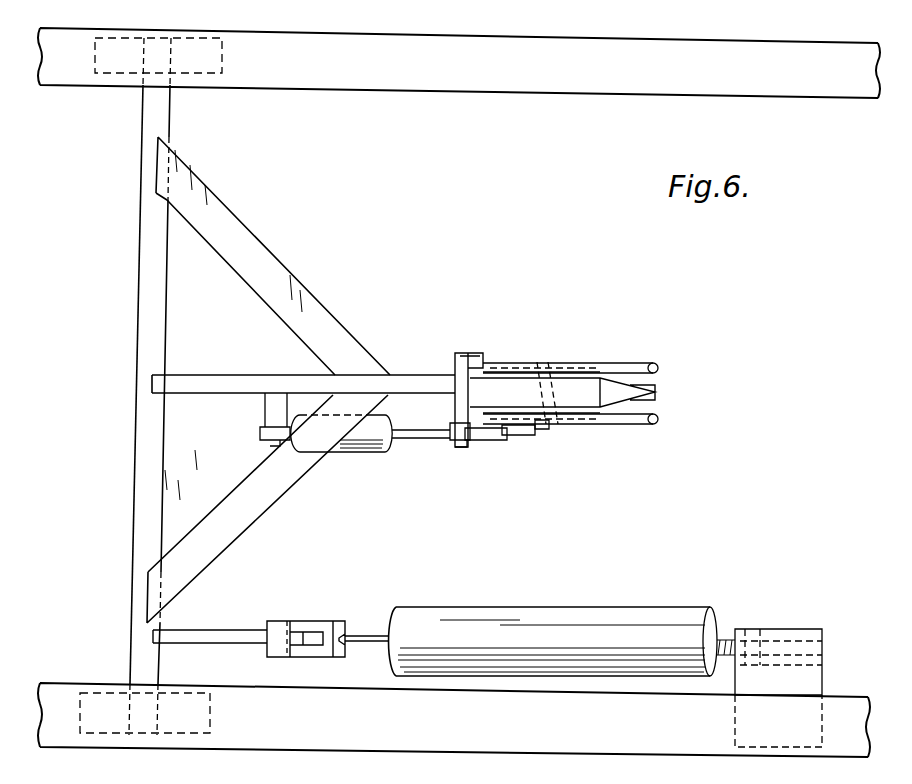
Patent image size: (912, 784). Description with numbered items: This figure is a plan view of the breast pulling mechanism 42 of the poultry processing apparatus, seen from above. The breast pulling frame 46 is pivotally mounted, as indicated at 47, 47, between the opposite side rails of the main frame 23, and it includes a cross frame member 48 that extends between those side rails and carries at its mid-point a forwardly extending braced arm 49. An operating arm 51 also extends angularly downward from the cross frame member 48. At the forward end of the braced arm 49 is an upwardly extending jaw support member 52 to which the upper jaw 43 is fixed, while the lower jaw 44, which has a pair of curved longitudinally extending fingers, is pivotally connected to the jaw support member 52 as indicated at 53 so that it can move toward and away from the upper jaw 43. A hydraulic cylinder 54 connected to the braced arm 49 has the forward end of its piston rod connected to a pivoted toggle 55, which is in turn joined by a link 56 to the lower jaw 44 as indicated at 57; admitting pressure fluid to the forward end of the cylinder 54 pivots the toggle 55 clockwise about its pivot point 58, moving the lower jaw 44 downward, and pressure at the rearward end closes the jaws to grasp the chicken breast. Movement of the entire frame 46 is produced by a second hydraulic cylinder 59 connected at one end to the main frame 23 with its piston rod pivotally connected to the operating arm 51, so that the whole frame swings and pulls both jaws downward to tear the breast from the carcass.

The main frame 23 is at (518, 44).
The clamp assembly 42 is at (605, 293).
The upper jaw 43 is at (563, 388).
The lower jaw 44 is at (723, 392).
The breast pulling frame 46 is at (143, 285).
The pivotal mounting 47 is at (176, 60).
The cross frame member 48 is at (140, 462).
The braced arm 49 is at (232, 375).
The operating arm 51 is at (220, 630).
The jaw support member 52 is at (520, 368).
The pivotal connection 53 is at (463, 352).
The hydraulic cylinder 54 is at (354, 453).
The toggle 55 is at (500, 448).
The link 56 is at (540, 430).
The link connection 57 is at (520, 445).
The pivot point 58 is at (462, 448).
The hydraulic cylinder 59 is at (545, 615).